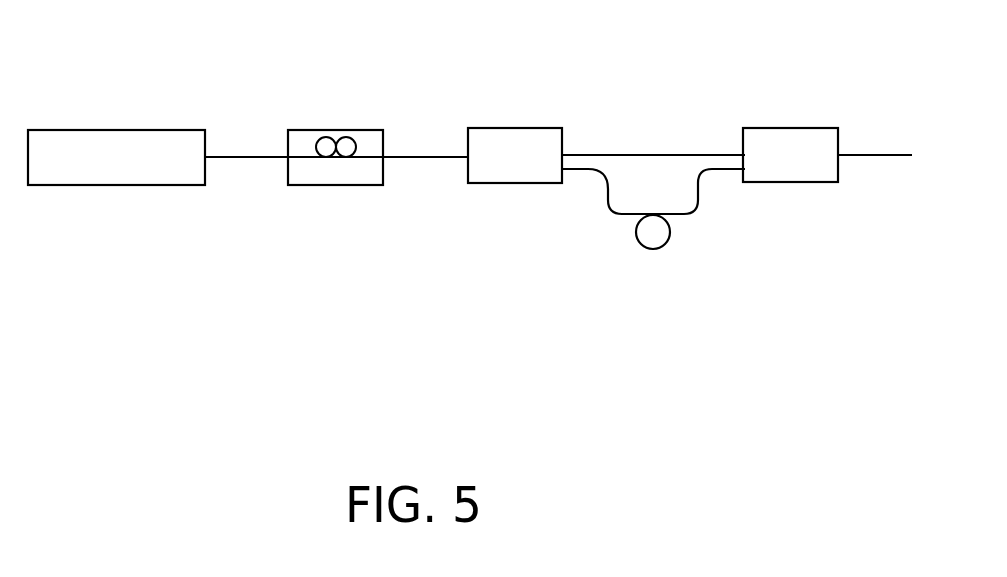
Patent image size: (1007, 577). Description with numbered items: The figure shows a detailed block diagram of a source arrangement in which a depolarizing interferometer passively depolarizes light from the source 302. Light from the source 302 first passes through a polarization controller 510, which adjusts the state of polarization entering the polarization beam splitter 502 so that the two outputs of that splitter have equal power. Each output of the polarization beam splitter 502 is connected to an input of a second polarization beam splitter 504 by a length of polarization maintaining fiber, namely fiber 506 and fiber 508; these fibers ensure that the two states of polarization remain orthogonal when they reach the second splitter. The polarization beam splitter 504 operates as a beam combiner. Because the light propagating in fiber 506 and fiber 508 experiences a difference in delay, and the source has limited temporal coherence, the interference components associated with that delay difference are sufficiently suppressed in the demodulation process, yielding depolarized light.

The source 302 is at (115, 130).
The polarization controller 510 is at (348, 186).
The polarization beam splitter 502 is at (495, 128).
The polarization beam splitter 504 is at (778, 128).
The polarization maintaining fiber 506 is at (650, 155).
The polarization maintaining fiber 508 is at (637, 243).